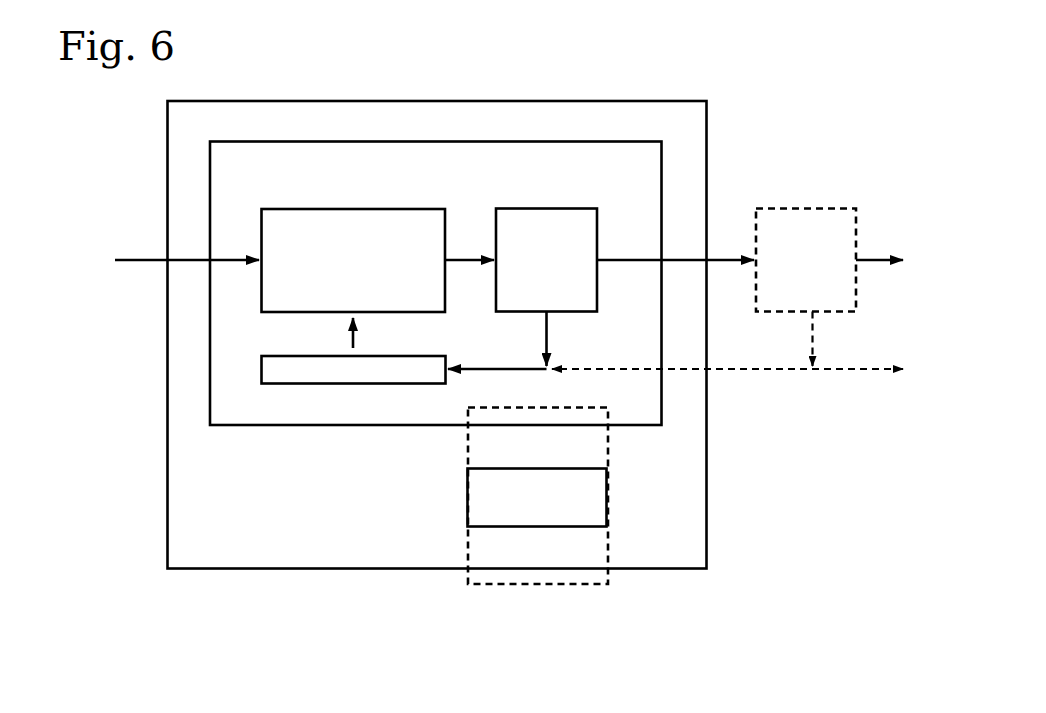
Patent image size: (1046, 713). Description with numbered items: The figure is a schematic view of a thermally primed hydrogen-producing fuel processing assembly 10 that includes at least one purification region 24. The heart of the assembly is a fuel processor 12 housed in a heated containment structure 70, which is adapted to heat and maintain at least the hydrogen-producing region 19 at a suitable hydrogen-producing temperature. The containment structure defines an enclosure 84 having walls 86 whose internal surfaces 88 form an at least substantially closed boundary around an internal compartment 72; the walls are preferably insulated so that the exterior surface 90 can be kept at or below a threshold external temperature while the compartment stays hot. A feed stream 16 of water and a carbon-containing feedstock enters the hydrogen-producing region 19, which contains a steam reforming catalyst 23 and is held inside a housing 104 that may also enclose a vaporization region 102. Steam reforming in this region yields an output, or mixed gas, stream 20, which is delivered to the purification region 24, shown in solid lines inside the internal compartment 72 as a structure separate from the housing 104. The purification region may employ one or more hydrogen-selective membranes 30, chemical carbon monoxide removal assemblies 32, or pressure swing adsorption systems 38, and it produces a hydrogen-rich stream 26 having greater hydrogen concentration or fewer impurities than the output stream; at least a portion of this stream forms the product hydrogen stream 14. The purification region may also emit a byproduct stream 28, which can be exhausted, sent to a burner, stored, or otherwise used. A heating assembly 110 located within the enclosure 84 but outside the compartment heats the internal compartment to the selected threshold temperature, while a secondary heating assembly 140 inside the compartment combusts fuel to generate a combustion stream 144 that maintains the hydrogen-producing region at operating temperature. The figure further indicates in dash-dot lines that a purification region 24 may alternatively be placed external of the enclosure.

The thermally primed fuel processing assembly 10 is at (103, 122).
The fuel processor 12 is at (140, 122).
The product hydrogen stream 14 is at (871, 258).
The feed stream 16 is at (145, 262).
The hydrogen-producing region 19 is at (421, 206).
The output stream 20 is at (464, 258).
The steam reforming catalyst 23 is at (428, 296).
The purification region 24 is at (270, 206).
The hydrogen-rich stream 26 is at (624, 258).
The byproduct stream 28 is at (548, 328).
The hydrogen-selective membrane 30 is at (317, 207).
The chemical carbon monoxide removal assembly 32 is at (325, 207).
The pressure swing adsorption system 38 is at (352, 207).
The heated containment structure 70 is at (583, 86).
The internal compartment 72 is at (640, 287).
The enclosure 84 is at (504, 99).
The walls 86 is at (331, 99).
The internal surfaces 88 is at (210, 375).
The exterior surface 90 is at (434, 337).
The vaporization region 102 is at (312, 296).
The housing 104 is at (391, 207).
The heating assembly 110 is at (507, 530).
The heating assembly 140 is at (354, 386).
The combustion stream 144 is at (356, 350).